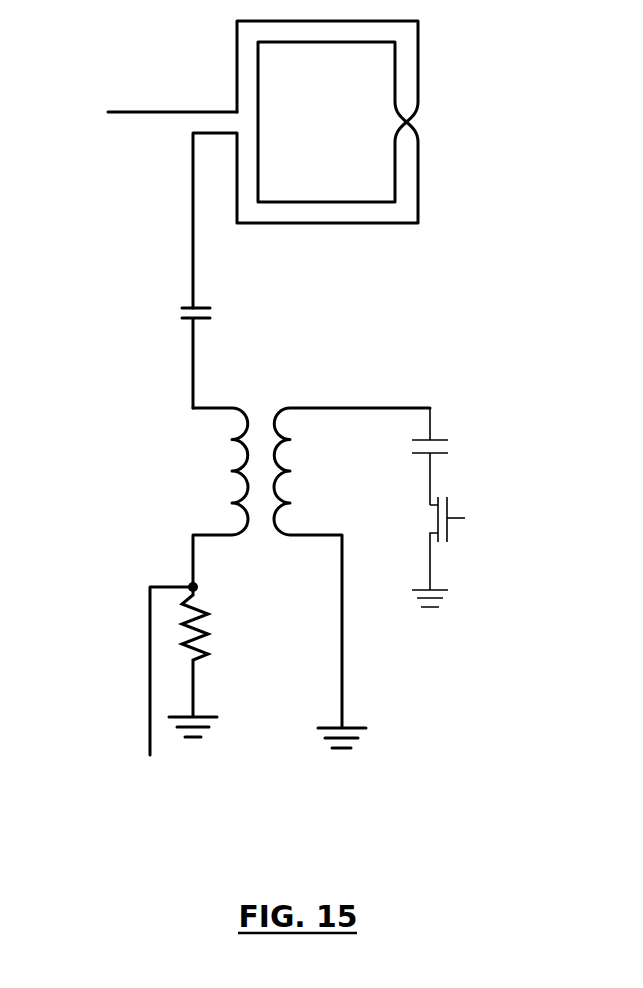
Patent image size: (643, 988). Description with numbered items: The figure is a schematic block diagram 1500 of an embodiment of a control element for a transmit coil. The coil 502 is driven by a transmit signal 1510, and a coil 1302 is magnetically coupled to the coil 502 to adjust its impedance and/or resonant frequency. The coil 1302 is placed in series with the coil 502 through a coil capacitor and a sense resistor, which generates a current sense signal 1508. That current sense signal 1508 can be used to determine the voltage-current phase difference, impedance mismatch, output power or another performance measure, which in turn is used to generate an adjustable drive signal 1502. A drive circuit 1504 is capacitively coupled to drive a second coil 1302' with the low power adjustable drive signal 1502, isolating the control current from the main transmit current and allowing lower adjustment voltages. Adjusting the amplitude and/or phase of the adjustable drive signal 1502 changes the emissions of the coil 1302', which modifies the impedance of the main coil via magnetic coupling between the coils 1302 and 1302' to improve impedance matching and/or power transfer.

The schematic block diagram 1500 is at (312, 457).
The coil 502 is at (305, 164).
The transmit signal 1510 is at (129, 113).
The coil 1302 is at (195, 497).
The coil 1302' is at (352, 578).
The adjustable drive signal 1502 is at (525, 513).
The drive circuit 1504 is at (456, 552).
The current sense signal 1508 is at (150, 718).